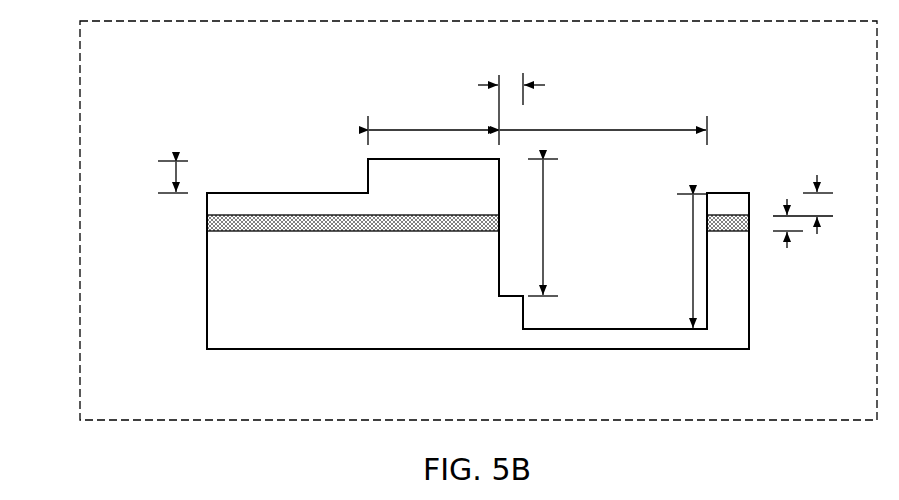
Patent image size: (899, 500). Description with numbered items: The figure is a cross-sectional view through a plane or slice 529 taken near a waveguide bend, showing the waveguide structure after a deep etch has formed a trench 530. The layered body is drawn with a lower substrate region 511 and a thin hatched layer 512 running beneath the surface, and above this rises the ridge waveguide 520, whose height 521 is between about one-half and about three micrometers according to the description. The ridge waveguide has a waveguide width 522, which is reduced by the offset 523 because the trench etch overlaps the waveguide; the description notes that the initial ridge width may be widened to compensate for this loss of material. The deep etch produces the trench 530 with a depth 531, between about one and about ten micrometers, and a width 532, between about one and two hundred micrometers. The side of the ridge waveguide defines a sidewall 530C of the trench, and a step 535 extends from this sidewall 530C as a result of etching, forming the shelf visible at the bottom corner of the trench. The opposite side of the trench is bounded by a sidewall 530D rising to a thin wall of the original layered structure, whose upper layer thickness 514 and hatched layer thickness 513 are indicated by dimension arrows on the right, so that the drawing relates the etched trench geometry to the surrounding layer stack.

The slice 529 is at (99, 50).
The substrate 511 is at (207, 283).
The buried layer 512 is at (207, 222).
The waveguide 520 is at (368, 172).
The height 521 is at (163, 177).
The waveguide width 522 is at (433, 110).
The offset 523 is at (527, 88).
The width 532 is at (603, 120).
The depth 531 is at (617, 243).
The trench 530 is at (595, 280).
The sidewall of the trench 530C is at (497, 247).
The cavity second sidewall 530D is at (707, 281).
The step 535 is at (504, 320).
The thickness of top layer 514 is at (803, 189).
The thickness of buried layer 513 is at (788, 239).